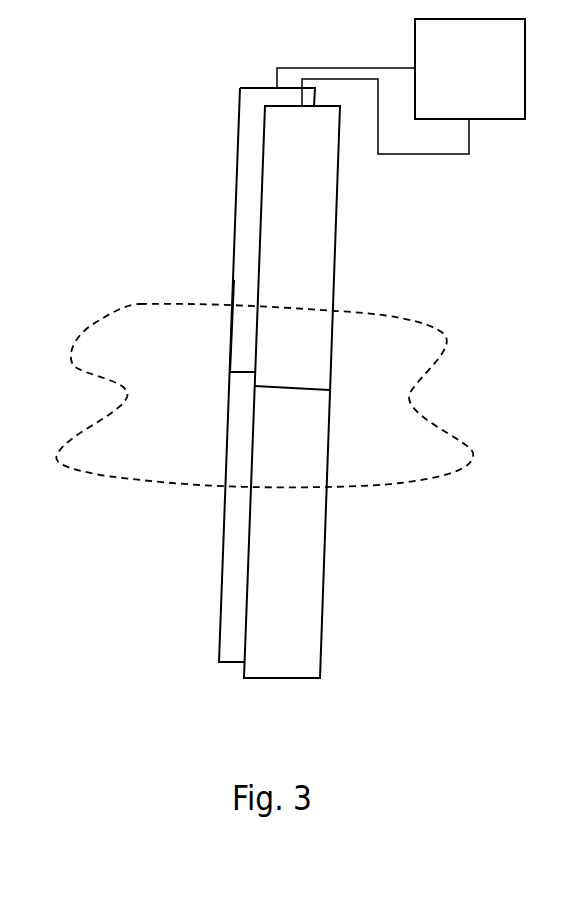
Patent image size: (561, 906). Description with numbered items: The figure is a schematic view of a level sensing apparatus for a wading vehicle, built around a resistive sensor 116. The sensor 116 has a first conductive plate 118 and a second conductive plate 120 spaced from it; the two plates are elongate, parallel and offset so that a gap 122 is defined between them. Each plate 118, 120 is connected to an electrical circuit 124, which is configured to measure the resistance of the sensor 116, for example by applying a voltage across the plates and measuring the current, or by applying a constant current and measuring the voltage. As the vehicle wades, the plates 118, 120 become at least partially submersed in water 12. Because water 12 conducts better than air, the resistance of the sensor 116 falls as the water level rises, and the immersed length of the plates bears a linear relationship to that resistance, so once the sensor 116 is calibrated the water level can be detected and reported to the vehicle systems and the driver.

The water 12 is at (168, 465).
The resistive sensor 116 is at (132, 138).
The first conductive plate 118 is at (233, 257).
The second conductive plate 120 is at (336, 213).
The gap 122 is at (243, 338).
The electrical circuit 124 is at (470, 69).